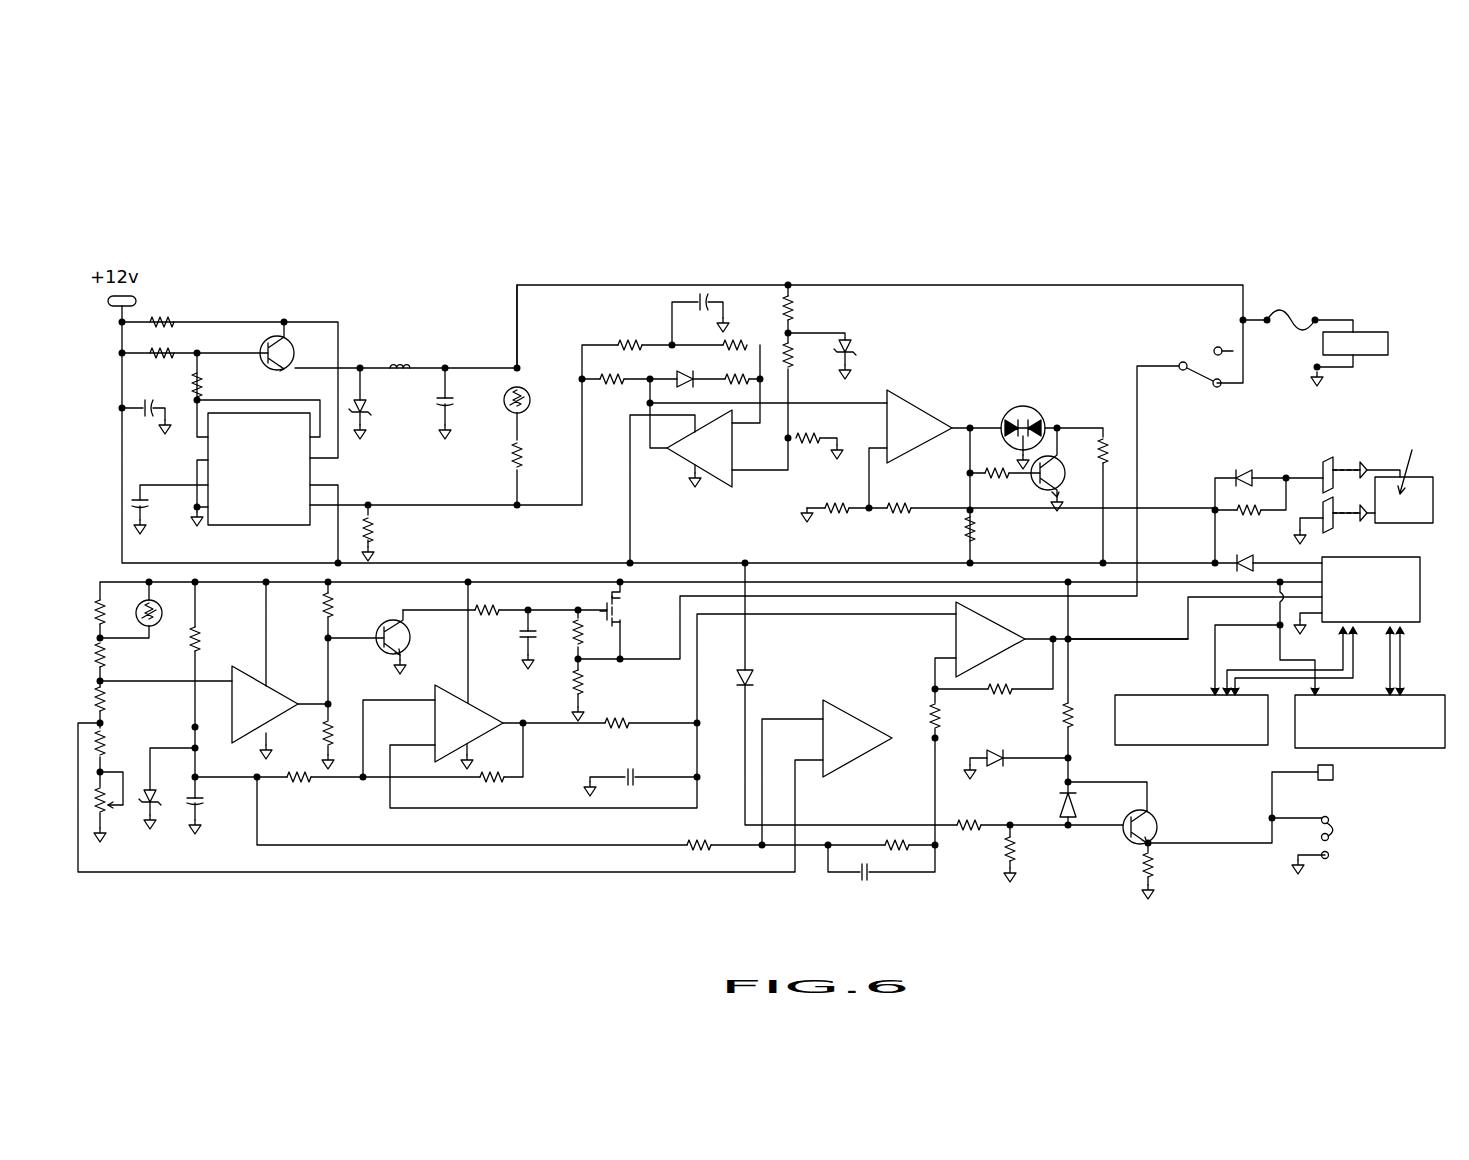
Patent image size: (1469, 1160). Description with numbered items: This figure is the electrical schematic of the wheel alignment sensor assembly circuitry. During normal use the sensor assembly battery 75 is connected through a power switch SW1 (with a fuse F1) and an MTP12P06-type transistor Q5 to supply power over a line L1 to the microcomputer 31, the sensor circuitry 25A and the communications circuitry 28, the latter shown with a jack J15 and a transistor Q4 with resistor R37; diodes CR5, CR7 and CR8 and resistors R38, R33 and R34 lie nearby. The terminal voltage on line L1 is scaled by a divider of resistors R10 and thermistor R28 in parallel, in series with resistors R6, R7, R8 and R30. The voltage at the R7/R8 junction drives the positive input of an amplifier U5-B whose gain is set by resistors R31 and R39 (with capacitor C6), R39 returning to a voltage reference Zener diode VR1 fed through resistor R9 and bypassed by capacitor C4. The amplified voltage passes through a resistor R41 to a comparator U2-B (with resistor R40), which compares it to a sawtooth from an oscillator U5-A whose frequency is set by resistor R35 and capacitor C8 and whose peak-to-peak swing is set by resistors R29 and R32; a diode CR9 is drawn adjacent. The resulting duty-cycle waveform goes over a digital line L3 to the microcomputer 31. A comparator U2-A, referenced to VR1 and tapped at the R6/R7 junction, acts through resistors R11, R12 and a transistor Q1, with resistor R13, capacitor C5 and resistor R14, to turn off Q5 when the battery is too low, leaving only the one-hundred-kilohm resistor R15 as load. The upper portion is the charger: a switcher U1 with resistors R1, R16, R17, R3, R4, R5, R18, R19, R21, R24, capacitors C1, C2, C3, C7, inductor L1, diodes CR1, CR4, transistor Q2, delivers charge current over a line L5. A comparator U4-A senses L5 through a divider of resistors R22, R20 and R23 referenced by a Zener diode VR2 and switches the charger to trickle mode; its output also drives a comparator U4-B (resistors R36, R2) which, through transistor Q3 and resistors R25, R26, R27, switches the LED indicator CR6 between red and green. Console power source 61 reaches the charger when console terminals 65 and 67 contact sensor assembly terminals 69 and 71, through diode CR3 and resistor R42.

The resistor R1 is at (165, 320).
The resistor R16 is at (165, 357).
The resistor R17 is at (204, 385).
The transistor Q2 is at (270, 338).
The switcher U1 is at (208, 455).
The capacitor C1 is at (140, 412).
The capacitor C2 is at (130, 503).
The resistor R3 is at (375, 522).
The line L1 is at (400, 364).
The diode CR1 is at (368, 420).
The capacitor C3 is at (438, 401).
The resistor R5 is at (505, 395).
The resistor R4 is at (510, 448).
The line L5 is at (515, 335).
The resistor R24 is at (615, 343).
The resistor R19 is at (595, 377).
The diode CR4 is at (675, 375).
The resistor R18 is at (735, 372).
The capacitor C7 is at (700, 300).
The resistor R21 is at (740, 340).
The comparator U4-A is at (685, 462).
The resistor R23 is at (800, 306).
The resistor R20 is at (798, 358).
The Zener diode VR2 is at (855, 348).
The resistor R22 is at (818, 445).
The comparator U4-B is at (905, 420).
The resistor R36 is at (832, 516).
The resistor R2 is at (895, 512).
The light-emitting diode indicator CR6 is at (1025, 406).
The transistor Q3 is at (1062, 480).
The resistor R25 is at (985, 475).
The resistor R26 is at (1100, 440).
The resistor R27 is at (975, 522).
The power switch SW1 is at (1195, 350).
The fuse F1 is at (1305, 330).
The sensor assembly battery 75 is at (1372, 337).
The diode CR3 is at (1245, 470).
The resistor R42 is at (1232, 502).
The sensor assembly terminal 69 is at (1323, 470).
The positive power terminal 65 is at (1358, 468).
The negative power terminal 67 is at (1363, 520).
The sensor assembly terminal 71 is at (1300, 522).
The console power source 61 is at (1433, 505).
The diode CR5 is at (1240, 557).
The microcomputer 31 is at (1420, 607).
The sensor circuitry 25A is at (1167, 693).
The communications circuitry 28 is at (1388, 750).
The jack J15 is at (1334, 773).
The transistor Q4 is at (1157, 818).
The resistor R37 is at (1155, 870).
The diode CR7 is at (1078, 808).
The resistor R38 is at (1062, 712).
The diode CR8 is at (997, 768).
The resistor R33 is at (1015, 850).
The resistor R34 is at (968, 835).
The resistor R40 is at (992, 686).
The comparator U2-B is at (950, 636).
The digital line L3 is at (1145, 637).
The resistor R41 is at (930, 715).
The amplifier U5-B is at (838, 700).
The resistor R31 is at (900, 840).
The capacitor C6 is at (862, 882).
The resistor R39 is at (690, 842).
The diode CR9 is at (752, 678).
The capacitor C8 is at (640, 777).
The resistor R35 is at (612, 728).
The resistor R32 is at (490, 782).
The oscillator U5-A is at (433, 722).
The resistor R29 is at (290, 785).
The capacitor C4 is at (205, 800).
The voltage reference Zener diode VR1 is at (160, 805).
The resistor R9 is at (200, 640).
The thermistor R28 is at (155, 628).
The resistor R10 is at (97, 605).
The resistor R6 is at (97, 660).
The resistor R7 is at (97, 705).
The resistor R8 is at (103, 750).
The resistor R30 is at (112, 810).
The comparator U2-A is at (232, 705).
The resistor R11 is at (325, 605).
The resistor R12 is at (333, 722).
The transistor Q1 is at (385, 625).
The resistor R13 is at (480, 608).
The capacitor C5 is at (522, 636).
The resistor R14 is at (575, 650).
The resistor R15 is at (583, 680).
The transistor Q5 is at (620, 610).